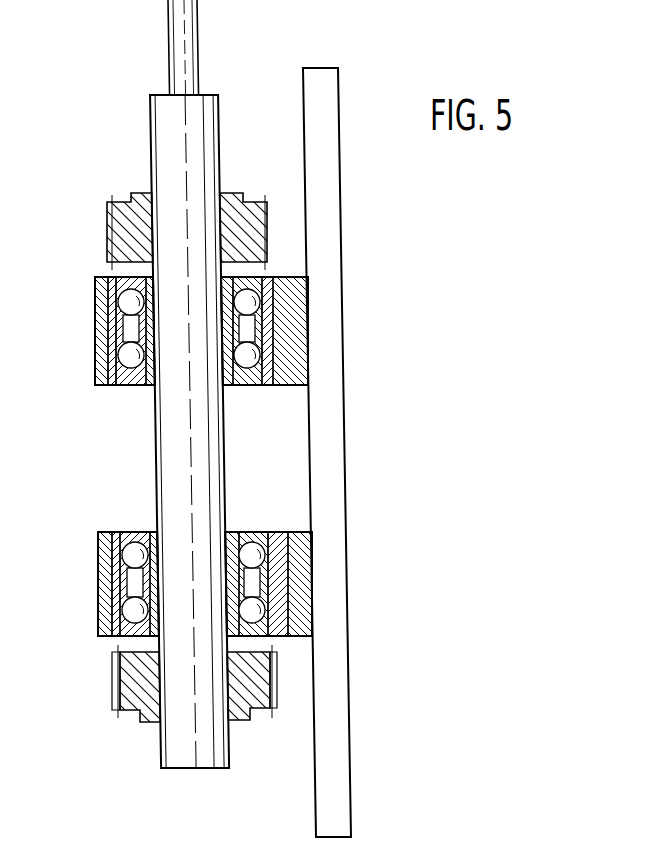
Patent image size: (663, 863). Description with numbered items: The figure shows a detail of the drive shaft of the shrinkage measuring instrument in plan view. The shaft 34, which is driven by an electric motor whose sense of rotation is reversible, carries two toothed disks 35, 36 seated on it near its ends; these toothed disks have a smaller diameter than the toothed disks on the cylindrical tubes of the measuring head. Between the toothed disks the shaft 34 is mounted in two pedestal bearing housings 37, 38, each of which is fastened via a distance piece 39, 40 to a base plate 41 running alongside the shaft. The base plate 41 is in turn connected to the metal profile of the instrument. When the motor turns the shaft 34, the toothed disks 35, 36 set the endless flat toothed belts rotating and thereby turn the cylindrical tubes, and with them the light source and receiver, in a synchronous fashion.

The shaft 34 is at (158, 115).
The toothed disk 35 is at (120, 222).
The toothed disk 36 is at (130, 702).
The pedestal bearing housing 37 is at (100, 362).
The pedestal bearing housing 38 is at (110, 568).
The distance piece 39 is at (298, 296).
The distance piece 40 is at (303, 595).
The base plate 41 is at (340, 720).